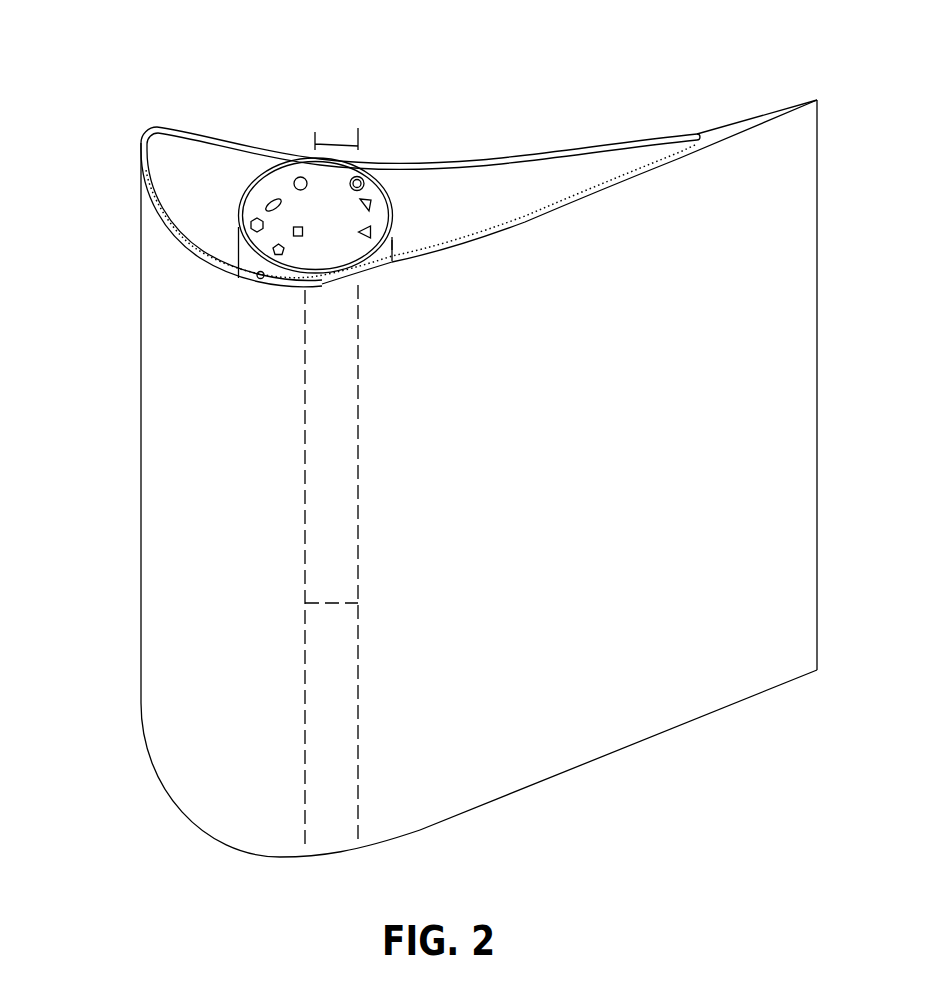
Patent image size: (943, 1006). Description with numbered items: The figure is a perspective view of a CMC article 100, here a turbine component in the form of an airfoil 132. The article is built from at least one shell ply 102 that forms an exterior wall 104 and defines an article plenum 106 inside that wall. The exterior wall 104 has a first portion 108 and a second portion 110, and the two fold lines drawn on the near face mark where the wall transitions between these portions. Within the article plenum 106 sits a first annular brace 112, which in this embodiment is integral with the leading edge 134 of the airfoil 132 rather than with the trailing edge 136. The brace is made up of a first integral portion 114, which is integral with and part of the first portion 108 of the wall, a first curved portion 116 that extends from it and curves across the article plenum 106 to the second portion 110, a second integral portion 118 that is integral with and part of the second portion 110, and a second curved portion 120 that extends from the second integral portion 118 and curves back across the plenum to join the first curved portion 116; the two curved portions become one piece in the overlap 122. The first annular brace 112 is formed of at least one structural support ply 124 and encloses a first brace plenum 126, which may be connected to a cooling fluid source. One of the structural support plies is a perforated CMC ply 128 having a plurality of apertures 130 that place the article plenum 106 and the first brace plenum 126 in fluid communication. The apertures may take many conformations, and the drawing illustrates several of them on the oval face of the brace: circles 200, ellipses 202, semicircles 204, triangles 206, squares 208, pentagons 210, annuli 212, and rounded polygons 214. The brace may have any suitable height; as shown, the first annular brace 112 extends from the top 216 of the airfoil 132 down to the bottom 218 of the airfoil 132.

The CMC article 100 is at (142, 102).
The shell ply 102 is at (617, 140).
The exterior wall 104 is at (163, 397).
The article plenum 106 is at (208, 163).
The first portion 108 is at (332, 600).
The second portion 110 is at (338, 150).
The first annular brace 112 is at (190, 195).
The first integral portion 114 is at (320, 286).
The first curved portion 116 is at (250, 188).
The second integral portion 118 is at (341, 155).
The second curved portion 120 is at (371, 203).
The overlap 122 is at (257, 276).
The structural support ply 124 is at (393, 255).
The first brace plenum 126 is at (325, 220).
The perforated CMC ply 128 is at (490, 222).
The apertures 130 is at (252, 281).
The airfoil 132 is at (160, 82).
The leading edge 134 is at (118, 483).
The trailing edge 136 is at (833, 182).
The circles 200 is at (300, 176).
The ellipses 202 is at (268, 200).
The semicircles 204 is at (371, 232).
The triangles 206 is at (392, 245).
The squares 208 is at (152, 128).
The pentagons 210 is at (250, 227).
The annuli 212 is at (359, 176).
The rounded polygons 214 is at (272, 252).
The top 216 is at (653, 137).
The bottom 218 is at (655, 737).